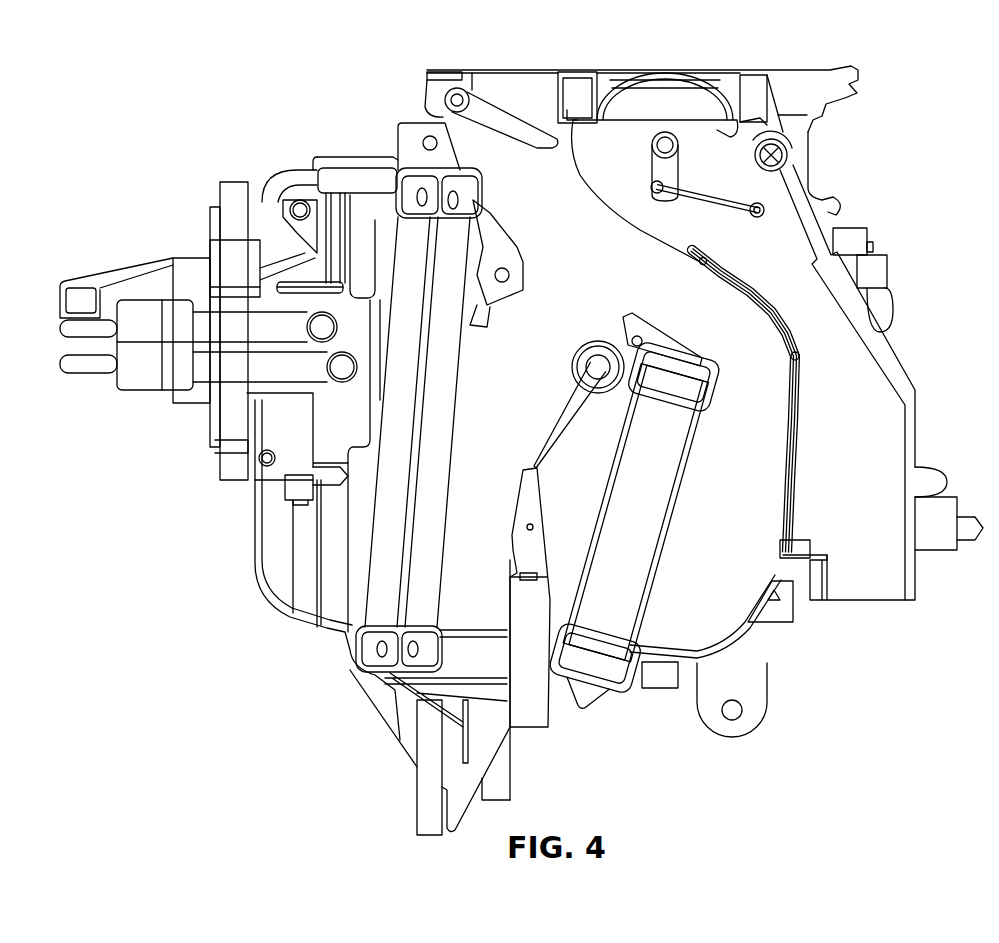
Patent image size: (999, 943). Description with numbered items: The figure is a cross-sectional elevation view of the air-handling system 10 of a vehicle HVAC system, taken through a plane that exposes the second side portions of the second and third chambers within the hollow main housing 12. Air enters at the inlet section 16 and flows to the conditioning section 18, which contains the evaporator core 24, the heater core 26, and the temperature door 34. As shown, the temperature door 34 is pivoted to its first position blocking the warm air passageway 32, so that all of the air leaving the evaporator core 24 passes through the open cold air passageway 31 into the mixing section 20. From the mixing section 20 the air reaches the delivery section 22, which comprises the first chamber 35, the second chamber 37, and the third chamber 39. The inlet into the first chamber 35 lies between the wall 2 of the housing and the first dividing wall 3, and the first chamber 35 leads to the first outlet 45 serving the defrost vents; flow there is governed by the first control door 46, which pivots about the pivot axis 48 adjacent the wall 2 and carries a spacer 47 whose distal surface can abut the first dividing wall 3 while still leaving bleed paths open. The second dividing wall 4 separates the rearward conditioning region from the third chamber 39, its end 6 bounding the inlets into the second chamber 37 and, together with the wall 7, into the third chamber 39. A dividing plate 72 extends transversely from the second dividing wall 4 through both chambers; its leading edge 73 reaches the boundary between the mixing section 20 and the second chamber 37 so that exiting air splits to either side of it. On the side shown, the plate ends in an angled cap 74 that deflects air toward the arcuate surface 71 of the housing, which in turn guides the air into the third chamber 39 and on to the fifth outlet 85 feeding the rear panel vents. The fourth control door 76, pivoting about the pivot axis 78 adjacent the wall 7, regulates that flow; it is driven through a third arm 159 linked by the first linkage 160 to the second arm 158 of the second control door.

The air-handling system 10 is at (364, 88).
The wall 2 is at (443, 130).
The first dividing wall 3 is at (580, 127).
The second dividing wall 4 is at (757, 305).
The end of the second dividing wall 6 is at (690, 260).
The wall 7 is at (809, 145).
The main housing 12 is at (913, 387).
The inlet section 16 is at (358, 517).
The conditioning section 18 is at (521, 570).
The mixing section 20 is at (577, 267).
The delivery section 22 is at (705, 145).
The evaporator core 24 is at (383, 548).
The heater core 26 is at (650, 510).
The cold air passageway 31 is at (552, 325).
The warm air passageway 32 is at (588, 435).
The temperature door 34 is at (577, 356).
The first chamber 35 is at (513, 92).
The second chamber 37 is at (617, 178).
The third chamber 39 is at (866, 385).
The first outlet 45 is at (480, 68).
The first control door 46 is at (515, 128).
The spacer 47 is at (557, 72).
The pivot axis 48 is at (455, 96).
The arcuate surface 71 is at (655, 76).
The dividing plate 72 is at (582, 203).
The leading edge 73 is at (620, 230).
The cap 74 is at (690, 94).
The fourth control door 76 is at (815, 206).
The pivot axis 78 is at (776, 140).
The fifth outlet 85 is at (882, 603).
The second arm 158 is at (648, 185).
The third arm 159 is at (763, 216).
The first linkage 160 is at (698, 202).